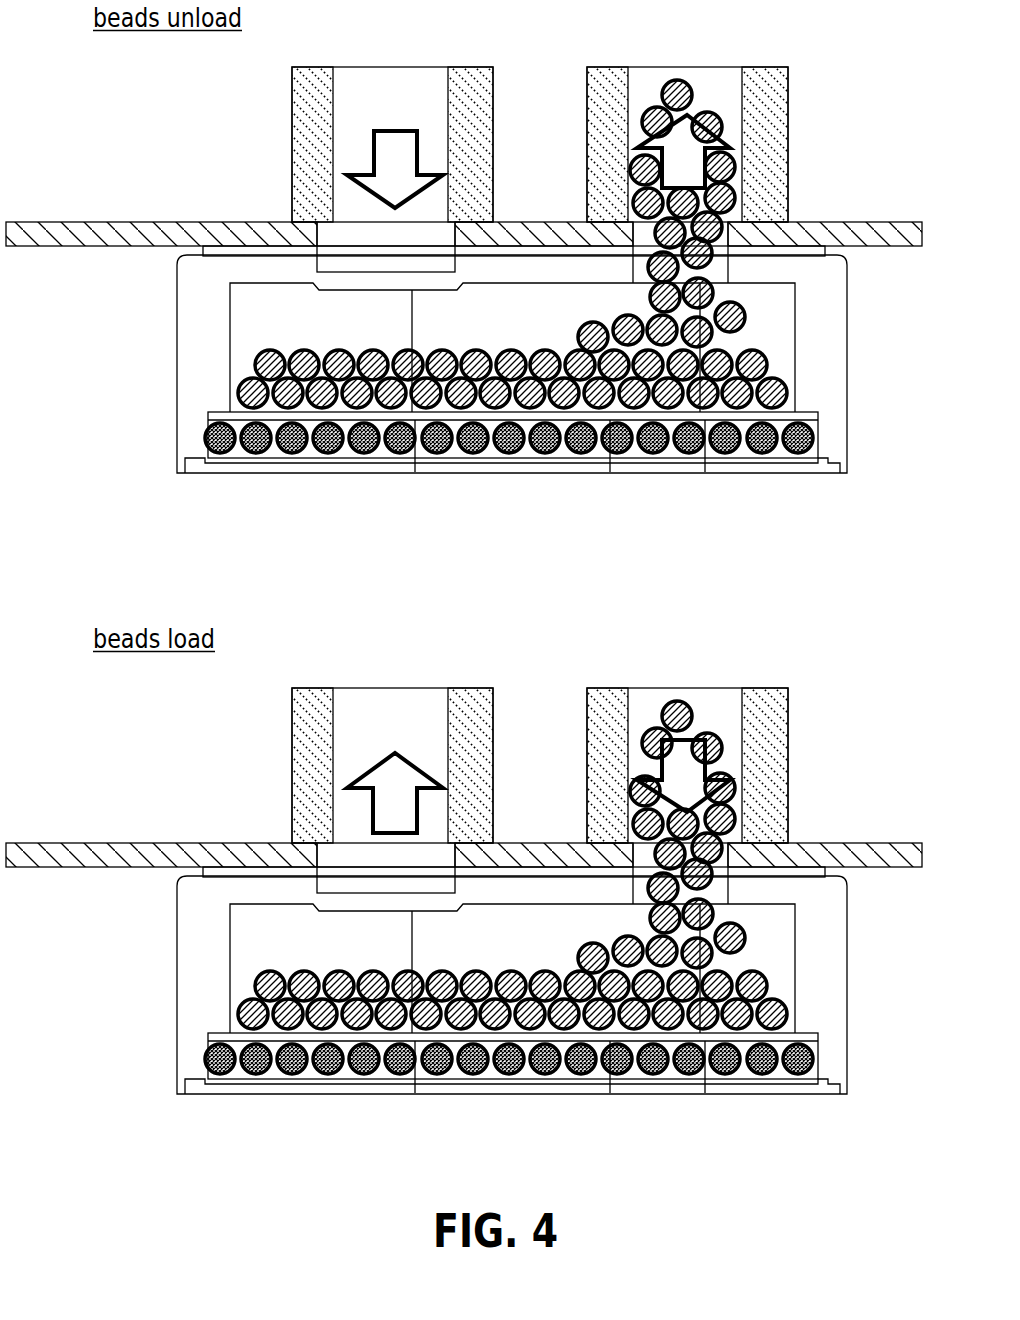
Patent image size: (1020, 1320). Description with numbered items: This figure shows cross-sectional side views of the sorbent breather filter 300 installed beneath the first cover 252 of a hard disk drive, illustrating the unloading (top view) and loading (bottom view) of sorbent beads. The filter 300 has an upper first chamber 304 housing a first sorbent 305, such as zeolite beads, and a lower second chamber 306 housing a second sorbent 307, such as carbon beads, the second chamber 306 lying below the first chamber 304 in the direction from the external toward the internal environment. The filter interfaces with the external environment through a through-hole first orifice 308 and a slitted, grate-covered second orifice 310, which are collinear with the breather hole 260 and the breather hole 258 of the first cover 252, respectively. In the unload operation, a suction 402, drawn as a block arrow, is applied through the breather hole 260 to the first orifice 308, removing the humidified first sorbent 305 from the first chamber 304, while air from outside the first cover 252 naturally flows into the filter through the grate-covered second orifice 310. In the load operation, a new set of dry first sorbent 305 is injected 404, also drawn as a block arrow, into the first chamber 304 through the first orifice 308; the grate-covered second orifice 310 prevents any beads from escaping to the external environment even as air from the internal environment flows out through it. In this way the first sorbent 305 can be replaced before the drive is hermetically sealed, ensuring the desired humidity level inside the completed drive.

The first cover 252 is at (870, 237).
The breather hole 258 is at (443, 233).
The breather hole 260 is at (742, 217).
The sorbent breather filter 300 is at (150, 397).
The first chamber 304 is at (240, 323).
The first sorbent 305 is at (753, 360).
The second chamber 306 is at (278, 468).
The second sorbent 307 is at (817, 432).
The first orifice 308 is at (718, 272).
The second orifice 310 is at (365, 263).
The suction 402 is at (677, 157).
The injection 404 is at (677, 778).